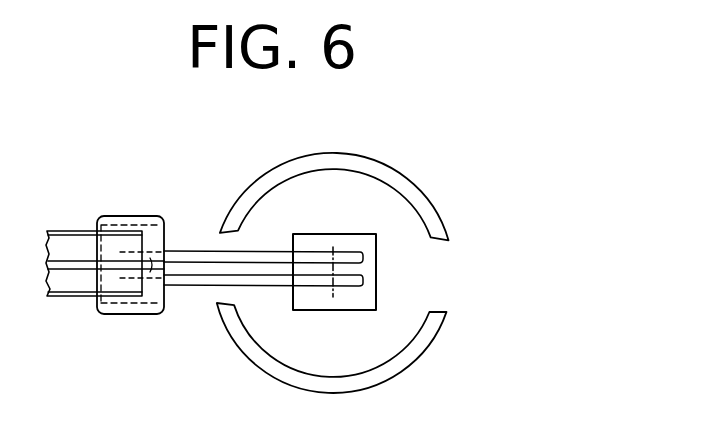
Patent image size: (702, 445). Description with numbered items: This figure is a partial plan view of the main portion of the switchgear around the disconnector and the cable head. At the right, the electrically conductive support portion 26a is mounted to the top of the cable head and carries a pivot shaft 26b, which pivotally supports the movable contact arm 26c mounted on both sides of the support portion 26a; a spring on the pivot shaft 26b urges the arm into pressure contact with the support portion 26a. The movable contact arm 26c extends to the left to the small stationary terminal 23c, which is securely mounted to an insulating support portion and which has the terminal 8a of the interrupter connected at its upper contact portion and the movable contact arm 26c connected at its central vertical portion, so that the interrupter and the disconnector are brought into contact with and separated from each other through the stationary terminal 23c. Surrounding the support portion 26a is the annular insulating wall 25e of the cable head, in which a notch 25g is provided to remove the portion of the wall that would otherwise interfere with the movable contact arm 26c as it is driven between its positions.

The terminal of the interrupter 8a is at (67, 297).
The stationary terminal 23c is at (138, 215).
The movable contact arm 26c is at (186, 250).
The support portion 26a is at (378, 234).
The pivot shaft 26b is at (338, 250).
The annular insulating wall 25e is at (371, 254).
The notch 25g is at (223, 243).